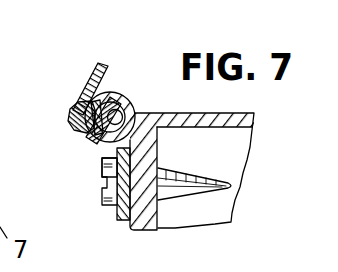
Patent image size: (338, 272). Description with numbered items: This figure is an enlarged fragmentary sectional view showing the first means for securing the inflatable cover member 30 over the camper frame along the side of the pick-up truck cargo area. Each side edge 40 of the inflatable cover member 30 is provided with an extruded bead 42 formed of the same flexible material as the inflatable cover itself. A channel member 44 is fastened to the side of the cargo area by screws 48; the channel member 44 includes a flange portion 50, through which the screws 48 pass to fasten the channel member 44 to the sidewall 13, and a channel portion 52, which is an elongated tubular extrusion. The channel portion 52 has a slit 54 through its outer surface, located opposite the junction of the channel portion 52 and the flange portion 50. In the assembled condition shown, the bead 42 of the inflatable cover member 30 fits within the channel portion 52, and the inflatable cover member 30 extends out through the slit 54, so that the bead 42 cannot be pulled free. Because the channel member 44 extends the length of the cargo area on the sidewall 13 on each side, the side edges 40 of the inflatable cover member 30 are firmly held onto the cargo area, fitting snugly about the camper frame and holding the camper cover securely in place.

The sidewall 13 is at (138, 151).
The inflatable cover member 30 is at (89, 80).
The side edge 40 is at (70, 110).
The extruded bead 42 is at (84, 132).
The channel member 44 is at (115, 93).
The screws 48 is at (102, 199).
The flange portion 50 is at (118, 213).
The channel portion 52 is at (95, 146).
The slit 54 is at (70, 122).